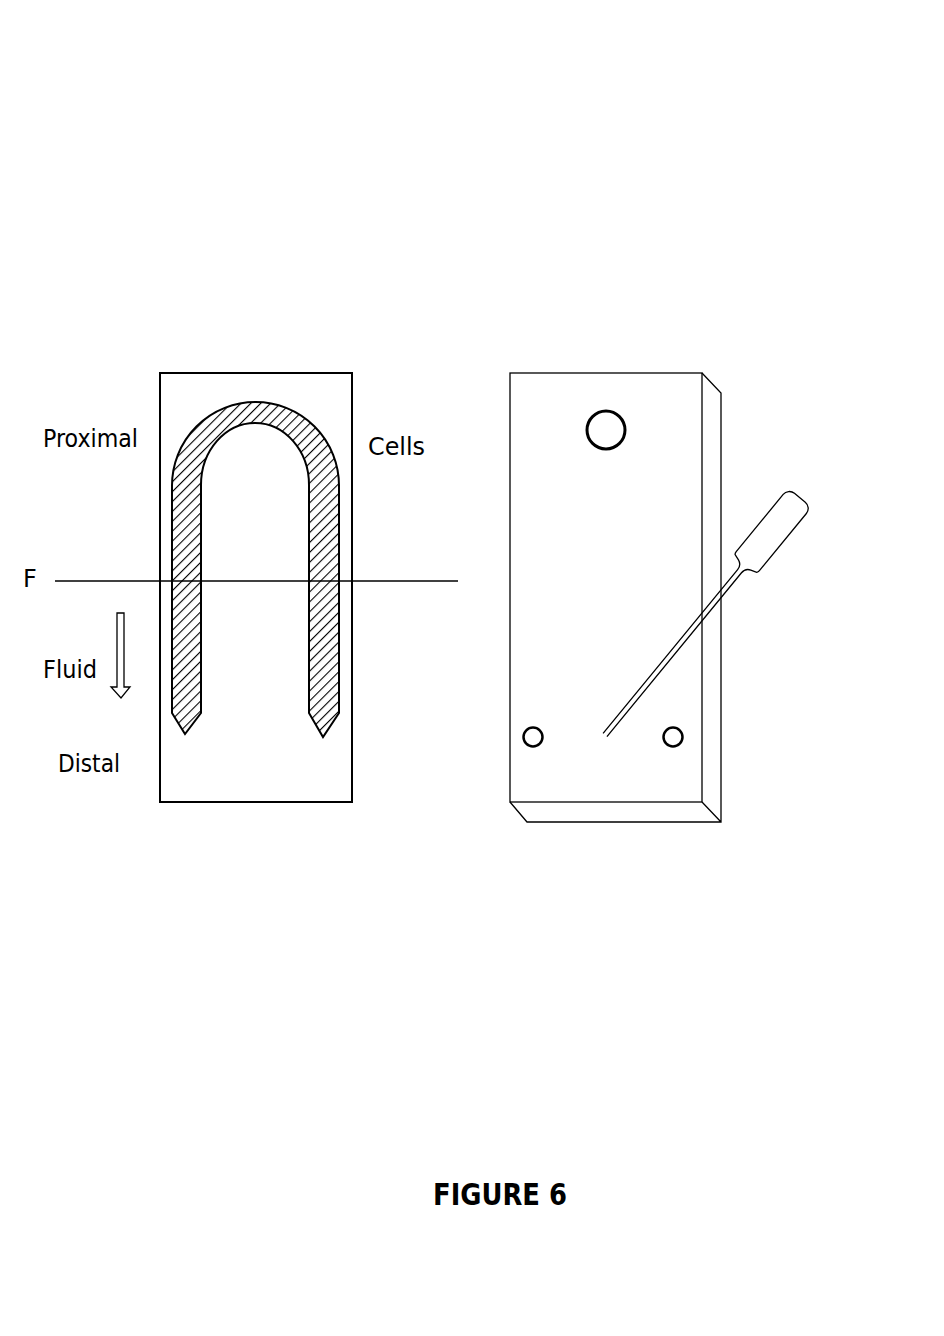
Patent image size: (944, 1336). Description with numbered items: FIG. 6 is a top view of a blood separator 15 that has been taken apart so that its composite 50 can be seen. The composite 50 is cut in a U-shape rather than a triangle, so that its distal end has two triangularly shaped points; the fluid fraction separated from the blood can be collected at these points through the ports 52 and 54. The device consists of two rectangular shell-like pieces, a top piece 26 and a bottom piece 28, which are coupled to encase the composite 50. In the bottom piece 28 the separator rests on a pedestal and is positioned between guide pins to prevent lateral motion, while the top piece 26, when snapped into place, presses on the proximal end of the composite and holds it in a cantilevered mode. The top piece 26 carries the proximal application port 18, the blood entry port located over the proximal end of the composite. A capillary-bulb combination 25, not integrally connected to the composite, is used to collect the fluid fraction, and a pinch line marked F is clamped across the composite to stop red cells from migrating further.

The blood separator 15 is at (235, 123).
The composite 50 is at (286, 408).
The proximal application port 18 is at (585, 431).
The capillary-bulb combination 25 is at (743, 587).
The port 52 is at (522, 735).
The port 54 is at (685, 737).
The bottom piece 28 is at (220, 782).
The top piece 26 is at (538, 765).